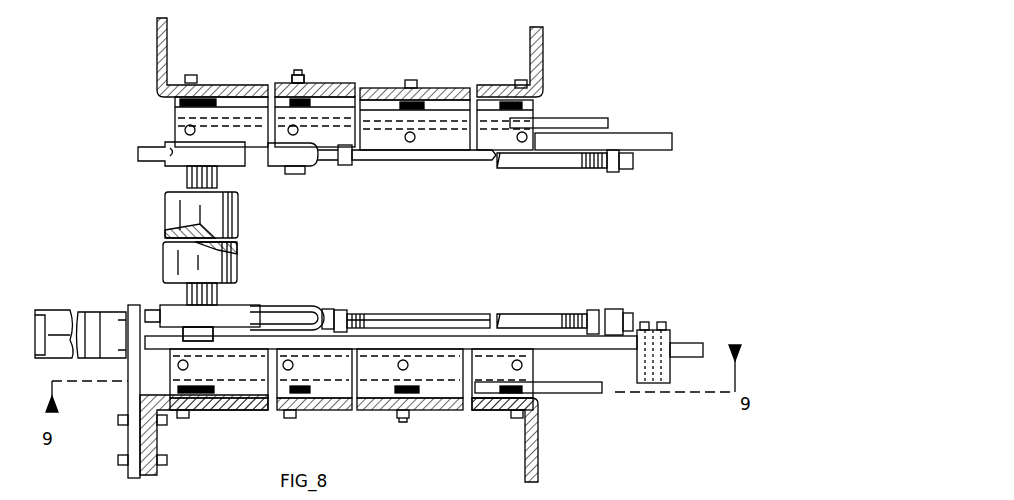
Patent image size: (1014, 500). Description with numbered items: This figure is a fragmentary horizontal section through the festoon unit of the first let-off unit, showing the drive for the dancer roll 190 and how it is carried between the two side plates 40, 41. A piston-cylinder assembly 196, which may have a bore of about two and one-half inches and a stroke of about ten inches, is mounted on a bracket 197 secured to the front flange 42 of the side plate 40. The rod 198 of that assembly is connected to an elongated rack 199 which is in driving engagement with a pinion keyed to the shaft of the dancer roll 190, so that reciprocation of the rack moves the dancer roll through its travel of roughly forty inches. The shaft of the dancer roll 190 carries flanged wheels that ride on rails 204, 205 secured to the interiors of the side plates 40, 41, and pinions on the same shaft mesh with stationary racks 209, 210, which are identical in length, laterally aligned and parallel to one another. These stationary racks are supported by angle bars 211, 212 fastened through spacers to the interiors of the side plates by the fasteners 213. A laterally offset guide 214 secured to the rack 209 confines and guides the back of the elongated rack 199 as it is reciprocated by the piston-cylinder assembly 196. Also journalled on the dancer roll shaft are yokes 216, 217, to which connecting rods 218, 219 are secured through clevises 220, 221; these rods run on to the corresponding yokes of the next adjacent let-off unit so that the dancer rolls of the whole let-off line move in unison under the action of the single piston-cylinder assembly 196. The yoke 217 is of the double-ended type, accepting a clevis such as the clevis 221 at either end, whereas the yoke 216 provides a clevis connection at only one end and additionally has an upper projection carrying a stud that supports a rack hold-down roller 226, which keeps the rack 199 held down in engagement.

The side plate 40 is at (435, 412).
The side plate 41 is at (386, 90).
The front flange 42 is at (545, 82).
The dancer roll 190 is at (252, 213).
The piston-cylinder assembly 196 is at (55, 318).
The bracket 197 is at (128, 440).
The rod 198 is at (148, 320).
The elongated rack 199 is at (430, 342).
The rail 204 is at (583, 394).
The rail 205 is at (624, 96).
The stationary rack 209 is at (627, 373).
The stationary rack 210 is at (648, 145).
The angle bar 211 is at (377, 358).
The angle bar 212 is at (445, 135).
The fasteners 213 is at (298, 84).
The laterally offset guide 214 is at (670, 336).
The yoke 216 is at (225, 316).
The yoke 217 is at (176, 160).
The connecting rod 218 is at (537, 316).
The connecting rod 219 is at (538, 168).
The clevis 220 is at (300, 313).
The clevis 221 is at (300, 164).
The rack hold-down roller 226 is at (200, 340).